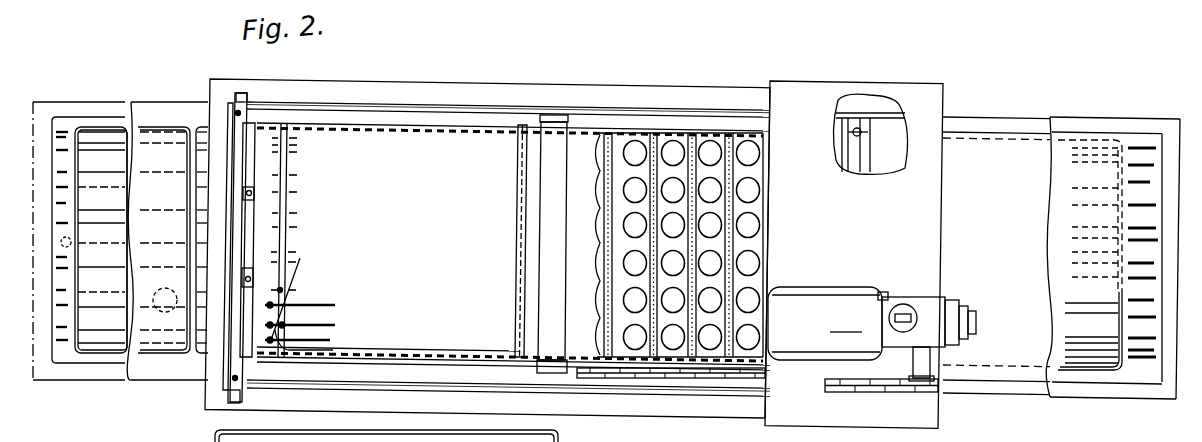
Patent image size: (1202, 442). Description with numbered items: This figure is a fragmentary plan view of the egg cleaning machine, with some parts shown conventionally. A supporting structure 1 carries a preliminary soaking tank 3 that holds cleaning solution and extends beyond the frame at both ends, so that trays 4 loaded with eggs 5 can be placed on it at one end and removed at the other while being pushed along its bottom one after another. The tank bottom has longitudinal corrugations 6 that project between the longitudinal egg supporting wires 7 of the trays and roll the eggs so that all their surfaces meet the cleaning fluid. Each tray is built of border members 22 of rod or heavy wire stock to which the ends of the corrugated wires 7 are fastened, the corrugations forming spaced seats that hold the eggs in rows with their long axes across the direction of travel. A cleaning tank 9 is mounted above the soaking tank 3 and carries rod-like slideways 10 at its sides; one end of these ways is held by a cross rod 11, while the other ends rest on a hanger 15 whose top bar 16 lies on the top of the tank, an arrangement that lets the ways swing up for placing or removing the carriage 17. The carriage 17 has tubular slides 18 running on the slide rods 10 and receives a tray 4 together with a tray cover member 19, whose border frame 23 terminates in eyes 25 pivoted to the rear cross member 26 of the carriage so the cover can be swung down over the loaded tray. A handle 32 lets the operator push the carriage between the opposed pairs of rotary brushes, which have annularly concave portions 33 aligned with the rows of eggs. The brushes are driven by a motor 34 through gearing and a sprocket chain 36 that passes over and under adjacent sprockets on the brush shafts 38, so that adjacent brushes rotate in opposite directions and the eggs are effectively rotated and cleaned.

The supporting structure 1 is at (662, 411).
The preliminary soaking tank 3 is at (163, 381).
The tray 4 is at (95, 355).
The eggs 5 is at (160, 308).
The longitudinal corrugations 6 is at (65, 132).
The longitudinal egg supporting wires 7 is at (110, 148).
The cleaning tank 9 is at (572, 407).
The rod-like slideways 10 is at (840, 132).
The cross rod 11 is at (857, 158).
The hanger 15 is at (240, 387).
The top bar 16 is at (240, 362).
The carriage 17 is at (257, 161).
The tubular slides 18 is at (253, 104).
The tray cover member 19 is at (302, 304).
The border members 22 is at (80, 355).
The border frame 23 is at (310, 362).
The eyes 25 is at (300, 293).
The rear cross member 26 is at (278, 241).
The handle 32 is at (243, 225).
The annularly concave portions 33 is at (605, 262).
The motor 34 is at (840, 300).
The sprocket chain 36 is at (620, 392).
The shafts 38 is at (722, 374).